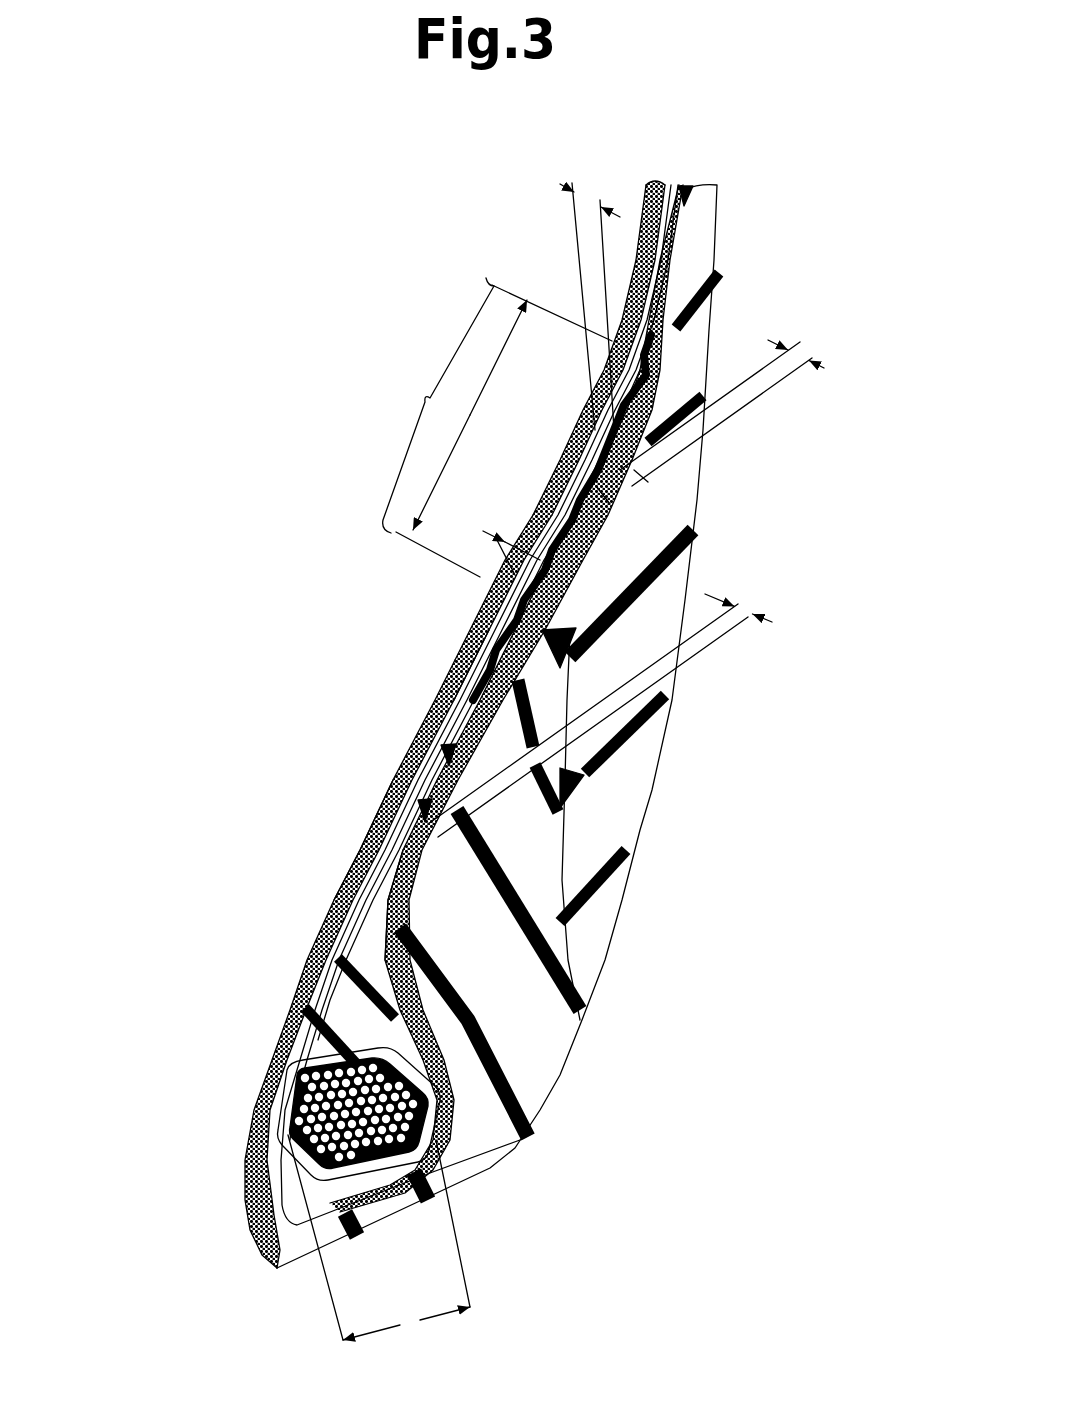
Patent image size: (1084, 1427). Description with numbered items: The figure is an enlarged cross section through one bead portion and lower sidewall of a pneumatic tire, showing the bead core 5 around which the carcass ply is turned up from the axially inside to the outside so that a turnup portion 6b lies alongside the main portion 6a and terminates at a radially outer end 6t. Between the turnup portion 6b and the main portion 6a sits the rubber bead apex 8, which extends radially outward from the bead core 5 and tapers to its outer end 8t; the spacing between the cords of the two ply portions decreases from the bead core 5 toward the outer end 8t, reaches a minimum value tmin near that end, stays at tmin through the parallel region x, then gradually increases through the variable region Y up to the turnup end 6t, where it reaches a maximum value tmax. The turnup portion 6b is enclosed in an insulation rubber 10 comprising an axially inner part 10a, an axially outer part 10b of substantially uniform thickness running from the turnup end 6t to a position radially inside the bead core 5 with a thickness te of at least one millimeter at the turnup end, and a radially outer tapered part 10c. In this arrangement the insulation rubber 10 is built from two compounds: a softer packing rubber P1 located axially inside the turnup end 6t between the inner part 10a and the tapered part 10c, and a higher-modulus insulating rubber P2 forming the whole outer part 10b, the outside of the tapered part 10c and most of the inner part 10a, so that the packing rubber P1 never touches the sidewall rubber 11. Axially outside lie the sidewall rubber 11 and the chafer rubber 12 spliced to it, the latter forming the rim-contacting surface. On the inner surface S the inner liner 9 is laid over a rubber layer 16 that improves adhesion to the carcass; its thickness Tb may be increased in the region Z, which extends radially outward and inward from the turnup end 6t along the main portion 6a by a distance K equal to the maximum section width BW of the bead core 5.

The bead core 5 is at (318, 1110).
The carcass main portion 6a is at (455, 742).
The carcass ply turnup portion 6b is at (520, 675).
The radially outer end of the turnup portion 6t is at (652, 476).
The bead apex 8 is at (345, 1017).
The outer end of the bead apex 8t is at (385, 917).
The inner liner 9 is at (405, 793).
The insulation rubber 10 is at (337, 303).
The axially inner part of the insulation rubber 10a is at (446, 713).
The axially outer part of the insulation rubber 10b is at (482, 622).
The radially outer tapered part of the insulation rubber 10c is at (590, 422).
The sidewall rubber 11 is at (690, 549).
The chafer rubber 12 is at (537, 1048).
The rubber layer 16 is at (402, 812).
The inner surface of the tire S is at (374, 834).
The variable region Y is at (477, 662).
The region Z is at (497, 427).
The distance K is at (506, 362).
The packing rubber P1 is at (603, 495).
The insulating rubber P2 is at (645, 474).
The thickness of the inner liner Tb is at (511, 535).
The parallel region x is at (502, 750).
The maximum value of the cord spacing tmax is at (592, 200).
The minimum value of the cord spacing tmin is at (611, 712).
The thickness of the axially outer part at the turnup end te is at (722, 410).
The maximum section width of the bead core BW is at (472, 1300).